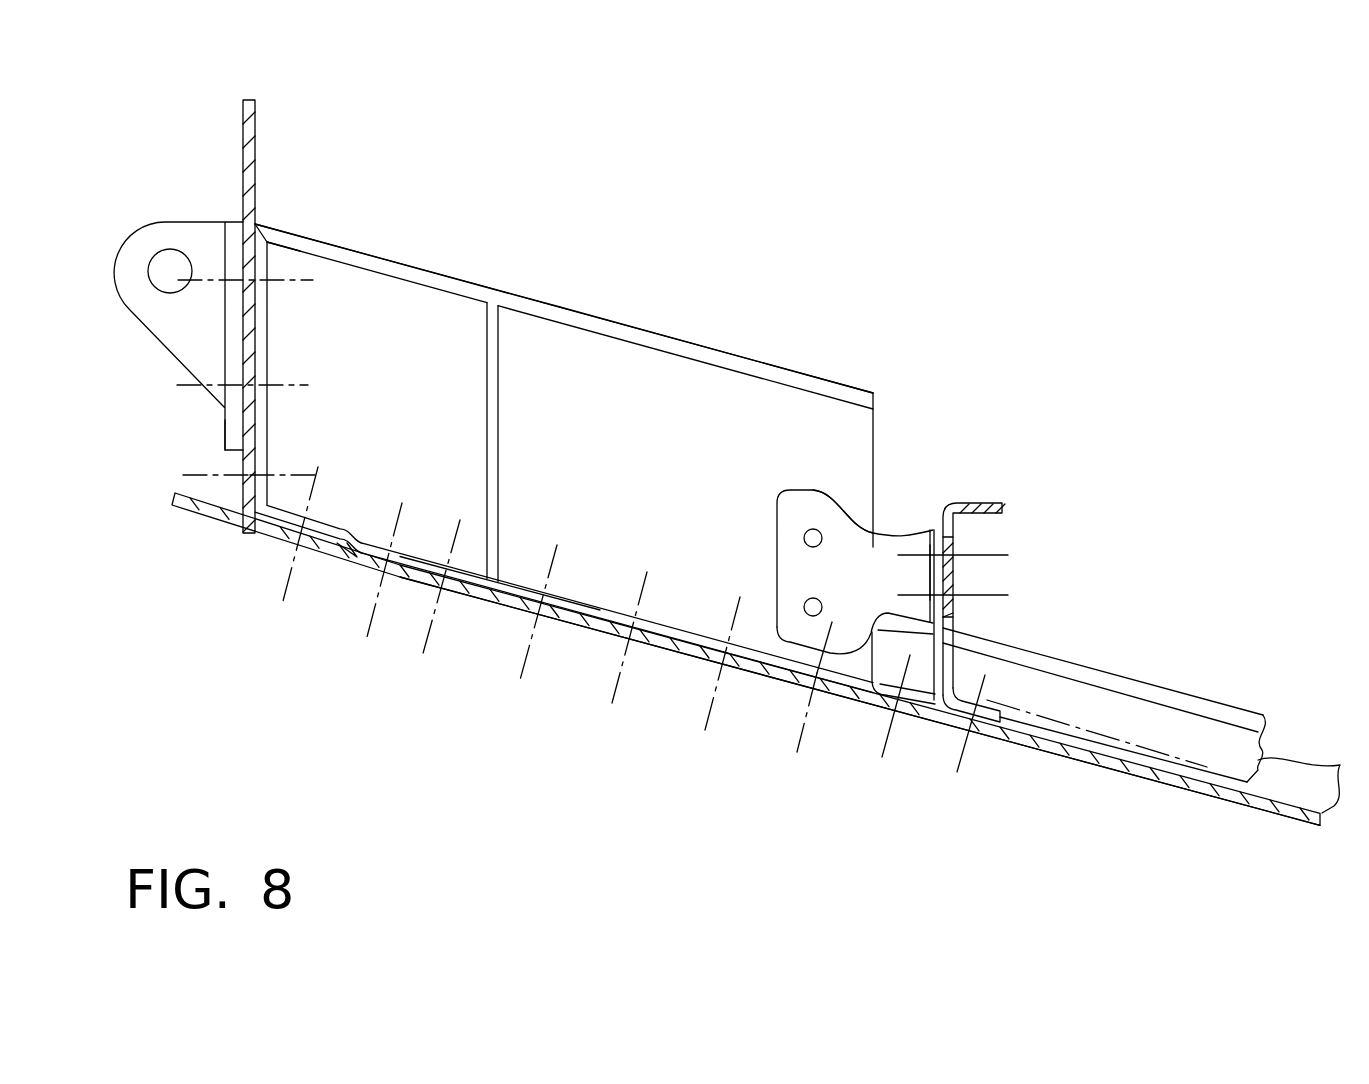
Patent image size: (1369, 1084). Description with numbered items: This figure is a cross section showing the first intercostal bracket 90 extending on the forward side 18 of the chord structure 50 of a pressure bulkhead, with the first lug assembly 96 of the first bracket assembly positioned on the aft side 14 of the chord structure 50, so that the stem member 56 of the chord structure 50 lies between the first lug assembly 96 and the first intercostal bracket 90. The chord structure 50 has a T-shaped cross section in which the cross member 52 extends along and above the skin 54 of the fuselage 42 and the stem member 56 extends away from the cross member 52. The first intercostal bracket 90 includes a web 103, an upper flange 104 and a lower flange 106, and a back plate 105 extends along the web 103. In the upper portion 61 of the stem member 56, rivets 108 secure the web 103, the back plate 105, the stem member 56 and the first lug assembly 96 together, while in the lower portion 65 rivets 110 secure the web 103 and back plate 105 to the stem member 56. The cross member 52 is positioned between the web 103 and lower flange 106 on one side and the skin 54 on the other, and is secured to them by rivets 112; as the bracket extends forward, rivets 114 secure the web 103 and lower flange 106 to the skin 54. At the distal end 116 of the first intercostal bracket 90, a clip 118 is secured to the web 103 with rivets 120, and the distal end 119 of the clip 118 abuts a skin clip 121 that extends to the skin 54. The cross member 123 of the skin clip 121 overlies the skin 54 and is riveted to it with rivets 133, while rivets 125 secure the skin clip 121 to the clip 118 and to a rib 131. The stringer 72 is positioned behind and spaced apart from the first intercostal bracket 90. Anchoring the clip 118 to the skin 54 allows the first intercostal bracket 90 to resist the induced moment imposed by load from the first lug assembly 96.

The aft side 14 is at (96, 353).
The forward side 18 is at (528, 201).
The fuselage 42 is at (1198, 810).
The chord structure 50 is at (258, 125).
The cross member 52 is at (287, 537).
The skin 54 is at (570, 623).
The stem member 56 is at (263, 250).
The upper portion 61 is at (273, 262).
The lower portion 65 is at (218, 464).
The stringer 72 is at (1207, 737).
The first intercostal bracket 90 is at (593, 373).
The first lug assembly 96 is at (200, 229).
The web 103 is at (553, 338).
The upper flange 104 is at (775, 363).
The back plate 105 is at (270, 442).
The lower flange 106 is at (752, 657).
The rivets 108 is at (297, 282).
The rivets 110 is at (318, 470).
The rivets 112 is at (318, 493).
The rivets 114 is at (398, 517).
The distal end 116 is at (877, 440).
The clip 118 is at (860, 562).
The distal end 119 is at (932, 558).
The rivets 120 is at (817, 536).
The skin clip 121 is at (1003, 622).
The cross member 123 is at (987, 717).
The rivets 125 is at (1003, 595).
The rib 131 is at (985, 502).
The rivets 133 is at (872, 630).